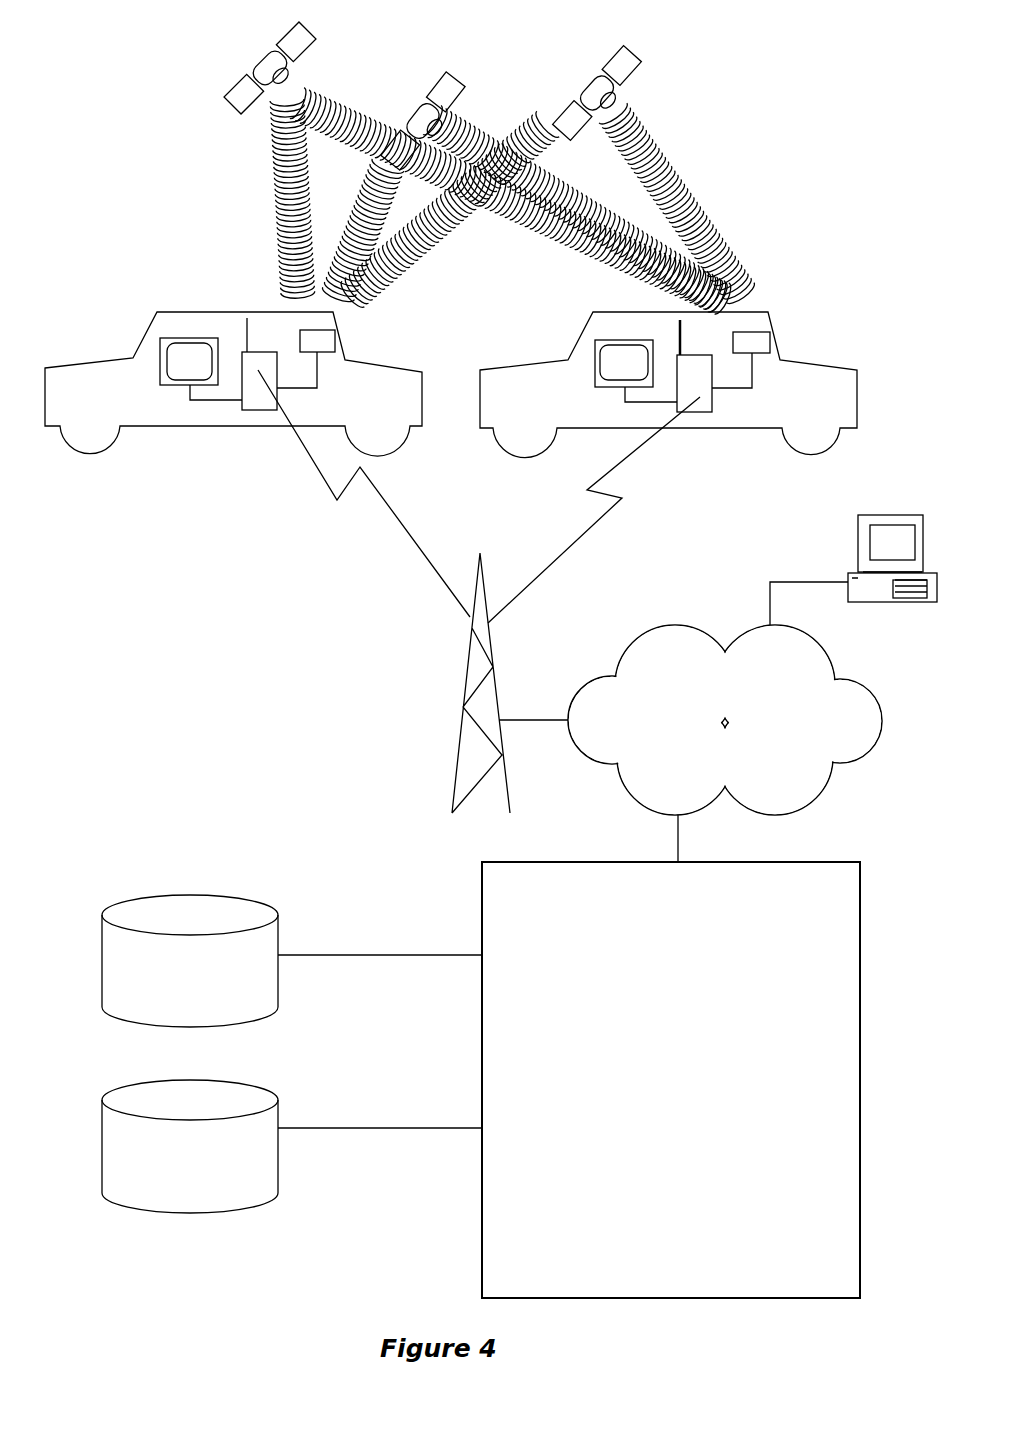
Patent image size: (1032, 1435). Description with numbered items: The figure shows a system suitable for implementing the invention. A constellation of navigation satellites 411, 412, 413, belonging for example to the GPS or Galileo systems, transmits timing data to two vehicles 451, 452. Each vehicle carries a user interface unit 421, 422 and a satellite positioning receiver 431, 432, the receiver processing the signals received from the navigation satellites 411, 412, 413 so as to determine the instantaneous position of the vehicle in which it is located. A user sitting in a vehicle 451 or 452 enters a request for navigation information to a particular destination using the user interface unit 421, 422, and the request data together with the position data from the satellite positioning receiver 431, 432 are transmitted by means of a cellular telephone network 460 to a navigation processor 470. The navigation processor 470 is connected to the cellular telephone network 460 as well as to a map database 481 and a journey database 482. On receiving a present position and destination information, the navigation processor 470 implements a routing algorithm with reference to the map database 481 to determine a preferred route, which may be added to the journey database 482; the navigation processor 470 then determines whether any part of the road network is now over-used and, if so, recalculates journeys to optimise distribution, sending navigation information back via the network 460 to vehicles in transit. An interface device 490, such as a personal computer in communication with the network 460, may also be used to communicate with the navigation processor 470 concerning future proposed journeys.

The navigation satellite 411 is at (333, 38).
The navigation satellite 412 is at (481, 81).
The navigation satellite 413 is at (652, 51).
The user interface unit 421 is at (145, 333).
The user interface unit 422 is at (582, 333).
The satellite positioning receiver 431 is at (350, 330).
The satellite positioning receiver 432 is at (787, 331).
The vehicle 451 is at (58, 355).
The vehicle 452 is at (492, 356).
The cellular telephone network 460 is at (676, 614).
The navigation processor 470 is at (472, 914).
The map database 481 is at (300, 915).
The journey database 482 is at (300, 1099).
The interface device 490 is at (850, 538).